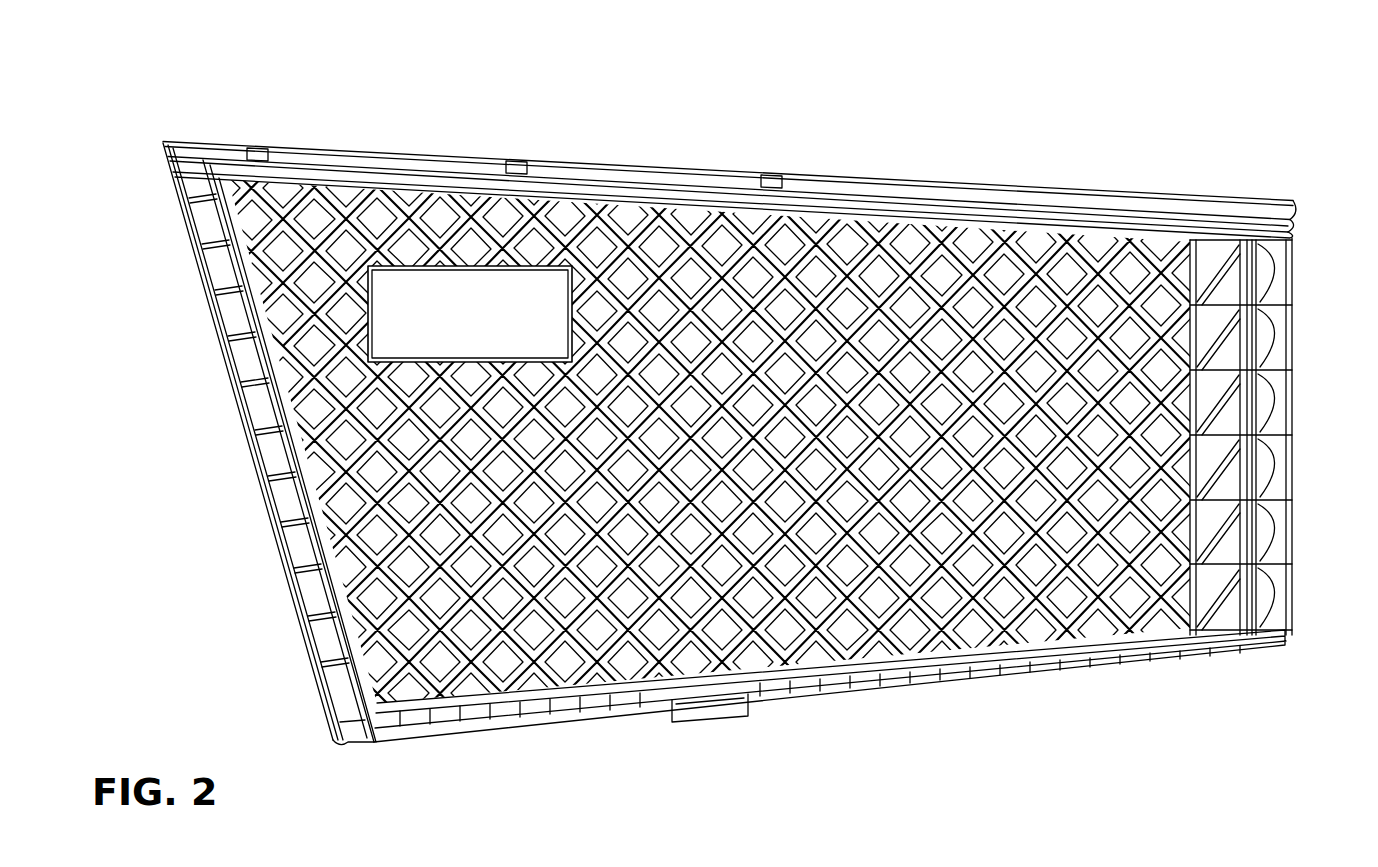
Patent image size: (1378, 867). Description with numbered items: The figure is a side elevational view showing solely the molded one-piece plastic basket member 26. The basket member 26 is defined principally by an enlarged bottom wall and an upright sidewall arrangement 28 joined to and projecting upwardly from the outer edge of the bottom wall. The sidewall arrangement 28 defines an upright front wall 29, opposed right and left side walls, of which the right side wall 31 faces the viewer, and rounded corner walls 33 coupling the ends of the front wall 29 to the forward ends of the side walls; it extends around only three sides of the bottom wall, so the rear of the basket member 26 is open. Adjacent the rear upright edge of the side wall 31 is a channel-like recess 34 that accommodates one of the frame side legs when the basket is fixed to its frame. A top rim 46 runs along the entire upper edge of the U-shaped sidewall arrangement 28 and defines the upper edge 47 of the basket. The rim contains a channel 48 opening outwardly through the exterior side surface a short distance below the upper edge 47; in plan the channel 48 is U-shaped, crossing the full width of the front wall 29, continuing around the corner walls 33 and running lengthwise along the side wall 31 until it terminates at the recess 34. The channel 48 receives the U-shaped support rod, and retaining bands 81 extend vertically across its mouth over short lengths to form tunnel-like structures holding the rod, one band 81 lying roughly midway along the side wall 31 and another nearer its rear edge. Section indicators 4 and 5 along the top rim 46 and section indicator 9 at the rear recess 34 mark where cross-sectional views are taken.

The plastic basket member 26 is at (1011, 152).
The top rim 46 is at (356, 138).
The channel 48 is at (583, 176).
The upper edge 47 is at (917, 182).
The retaining band 81 is at (257, 148).
The right side wall 31 is at (945, 600).
The channel-like recess 34 is at (318, 628).
The corner wall 33 is at (1297, 281).
The front wall 29 is at (1299, 328).
The sidewall arrangement 28 is at (1118, 668).
The section line 9- 9 is at (147, 143).
The section line 4- 4 is at (818, 157).
The section line 5- 5 is at (1155, 170).